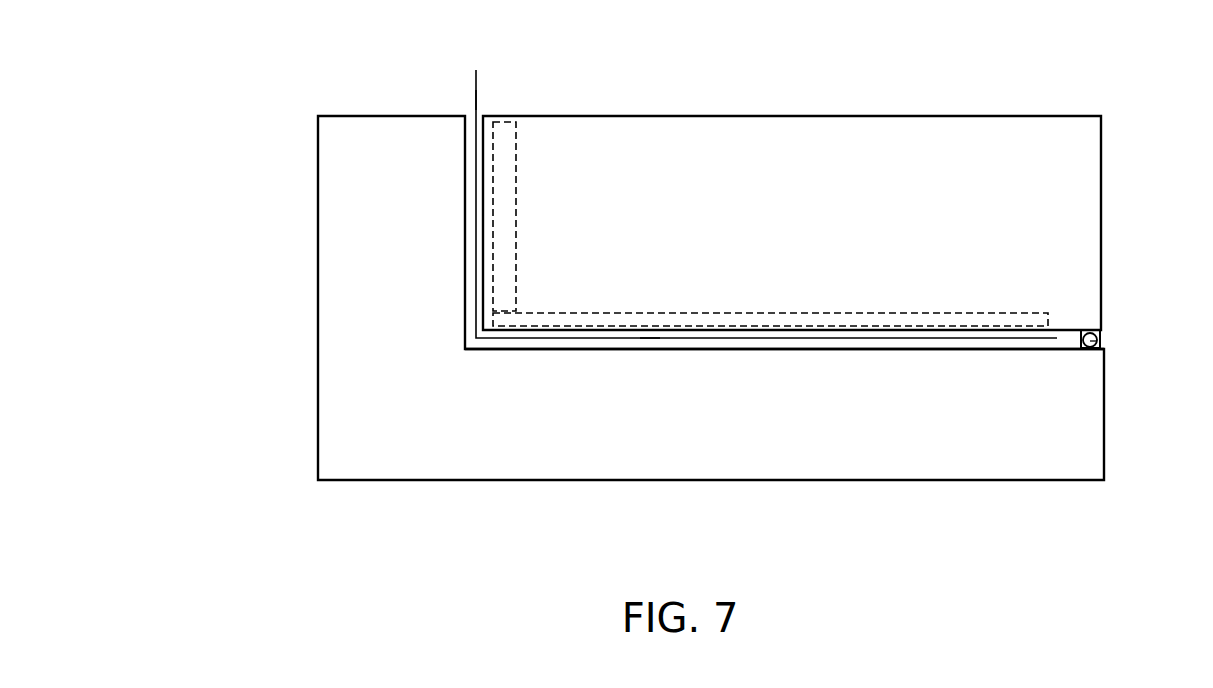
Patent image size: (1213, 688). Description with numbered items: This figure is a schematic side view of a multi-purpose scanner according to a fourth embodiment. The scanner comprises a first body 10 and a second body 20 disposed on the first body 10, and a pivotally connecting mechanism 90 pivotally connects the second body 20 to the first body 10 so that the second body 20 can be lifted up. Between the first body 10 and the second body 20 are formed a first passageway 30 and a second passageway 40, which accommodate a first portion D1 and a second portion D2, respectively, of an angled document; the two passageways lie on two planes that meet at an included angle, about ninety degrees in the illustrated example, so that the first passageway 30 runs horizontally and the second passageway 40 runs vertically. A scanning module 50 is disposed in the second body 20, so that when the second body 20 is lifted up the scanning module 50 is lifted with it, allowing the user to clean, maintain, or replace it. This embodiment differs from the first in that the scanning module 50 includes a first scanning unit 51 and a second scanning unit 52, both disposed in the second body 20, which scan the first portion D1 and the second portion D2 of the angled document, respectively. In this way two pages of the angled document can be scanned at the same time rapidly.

The first body 10 is at (328, 163).
The second body 20 is at (765, 125).
The first passageway 30 is at (792, 343).
The second passageway 40 is at (472, 140).
The scanning module 50 is at (780, 169).
The first scanning unit 51 is at (928, 312).
The second scanning unit 52 is at (517, 210).
The pivotally connecting mechanism 90 is at (1100, 342).
The first portion D1 is at (649, 339).
The second portion D2 is at (477, 101).